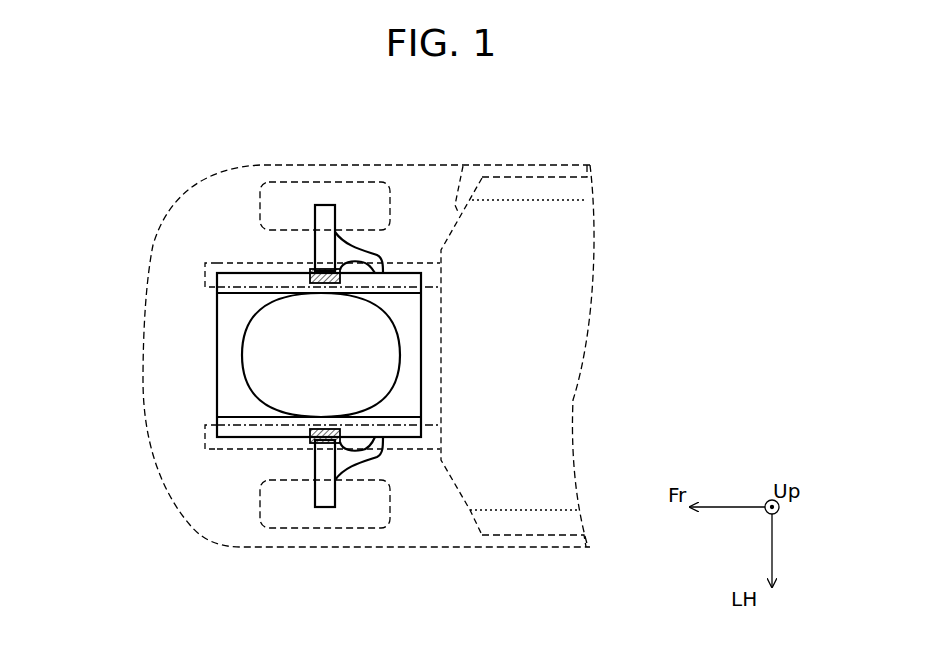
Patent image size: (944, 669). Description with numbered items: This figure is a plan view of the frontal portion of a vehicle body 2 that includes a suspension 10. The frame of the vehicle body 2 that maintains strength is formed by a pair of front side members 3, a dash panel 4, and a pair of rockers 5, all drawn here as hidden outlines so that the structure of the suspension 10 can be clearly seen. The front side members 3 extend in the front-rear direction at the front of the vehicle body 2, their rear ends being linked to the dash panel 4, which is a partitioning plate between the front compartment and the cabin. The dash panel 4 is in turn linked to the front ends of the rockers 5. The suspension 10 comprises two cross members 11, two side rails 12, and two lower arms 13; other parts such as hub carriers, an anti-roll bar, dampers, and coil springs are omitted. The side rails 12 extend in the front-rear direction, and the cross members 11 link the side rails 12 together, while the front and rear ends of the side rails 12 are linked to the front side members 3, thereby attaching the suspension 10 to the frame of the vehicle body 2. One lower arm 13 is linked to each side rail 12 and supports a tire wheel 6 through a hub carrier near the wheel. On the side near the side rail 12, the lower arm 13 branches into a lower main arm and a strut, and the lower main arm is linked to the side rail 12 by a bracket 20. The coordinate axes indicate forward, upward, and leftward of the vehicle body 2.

The vehicle body 2 is at (533, 165).
The front side members 3 is at (207, 260).
The dash panel 4 is at (456, 204).
The rockers 5 is at (584, 181).
The tire wheel 6 is at (392, 181).
The suspension 10 is at (205, 325).
The cross members 11 is at (215, 373).
The side rails 12 is at (250, 283).
The lower arms 13 is at (325, 205).
The bracket 20 is at (313, 270).